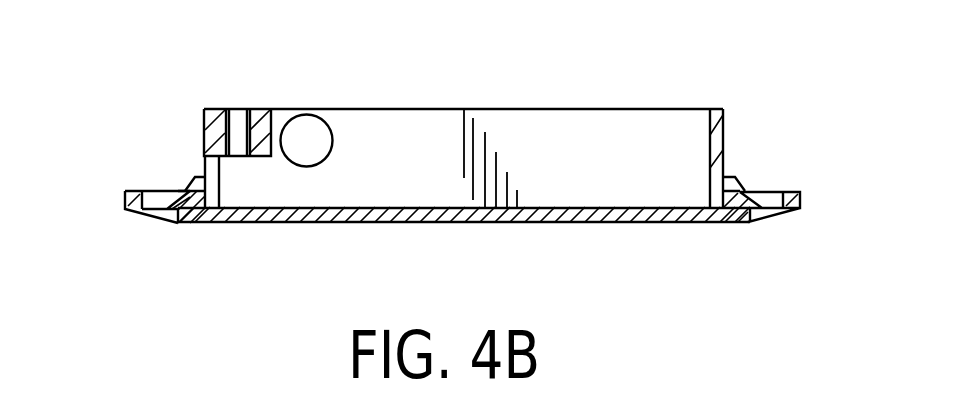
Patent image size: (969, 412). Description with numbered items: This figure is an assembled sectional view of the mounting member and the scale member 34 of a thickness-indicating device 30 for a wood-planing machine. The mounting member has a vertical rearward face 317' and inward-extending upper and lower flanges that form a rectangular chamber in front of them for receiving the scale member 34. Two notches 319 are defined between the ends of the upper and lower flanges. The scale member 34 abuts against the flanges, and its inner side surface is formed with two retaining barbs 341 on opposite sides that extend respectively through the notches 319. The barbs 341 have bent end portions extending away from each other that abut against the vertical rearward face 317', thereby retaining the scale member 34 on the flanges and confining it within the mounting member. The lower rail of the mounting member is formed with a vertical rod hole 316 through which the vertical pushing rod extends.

The thickness-indicating device 30 is at (812, 188).
The scale member 34 is at (447, 210).
The rod hole 316 is at (309, 128).
The vertical rearward face 317' is at (444, 168).
The notches 319 is at (212, 163).
The retaining barbs 341 is at (198, 181).